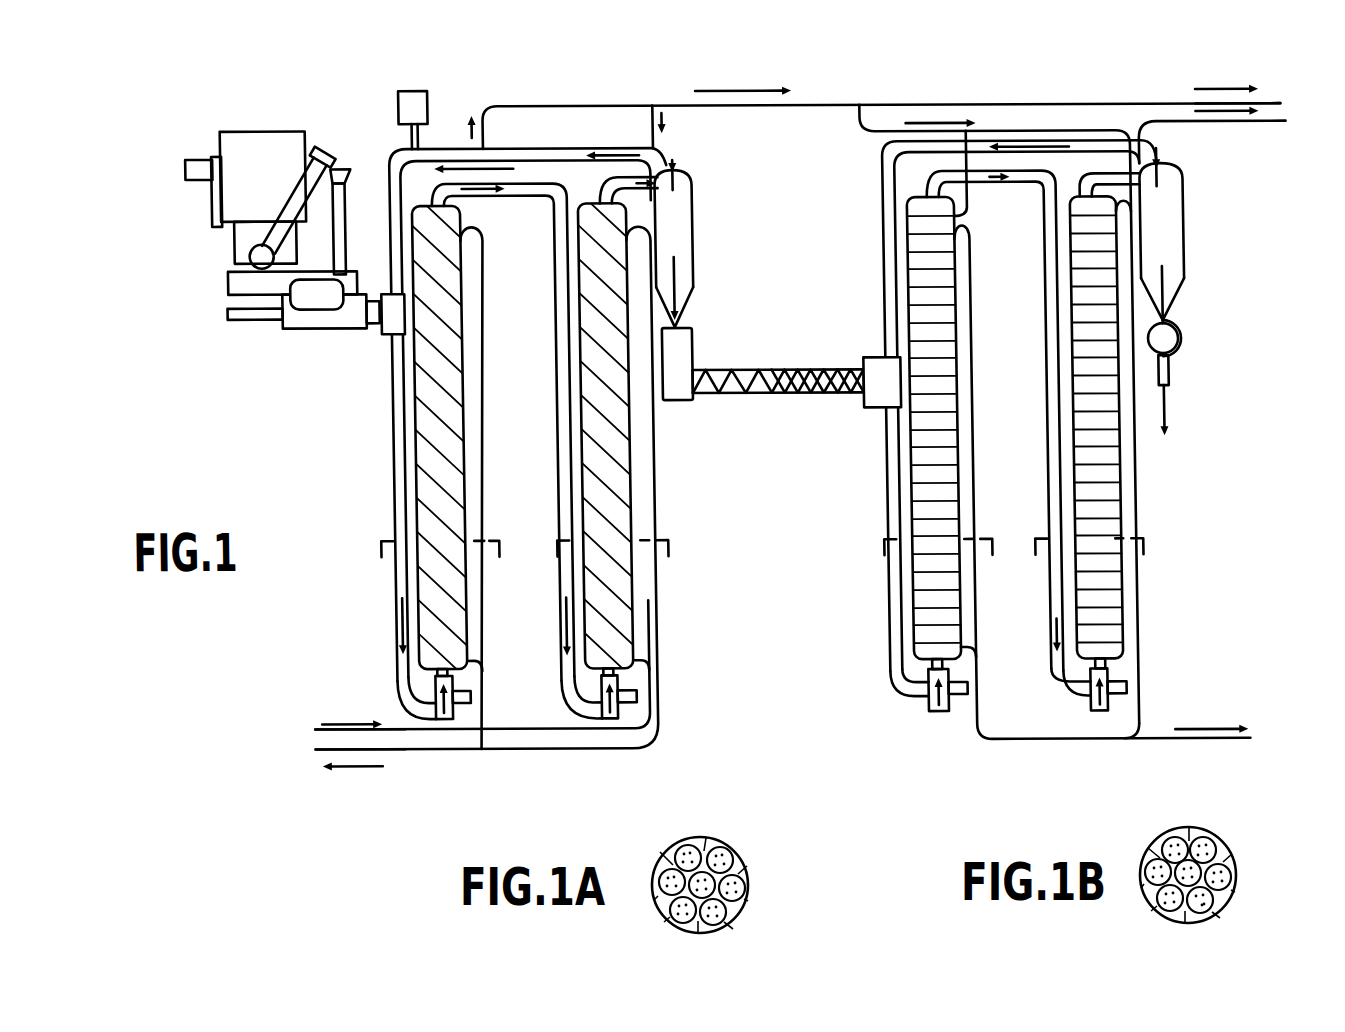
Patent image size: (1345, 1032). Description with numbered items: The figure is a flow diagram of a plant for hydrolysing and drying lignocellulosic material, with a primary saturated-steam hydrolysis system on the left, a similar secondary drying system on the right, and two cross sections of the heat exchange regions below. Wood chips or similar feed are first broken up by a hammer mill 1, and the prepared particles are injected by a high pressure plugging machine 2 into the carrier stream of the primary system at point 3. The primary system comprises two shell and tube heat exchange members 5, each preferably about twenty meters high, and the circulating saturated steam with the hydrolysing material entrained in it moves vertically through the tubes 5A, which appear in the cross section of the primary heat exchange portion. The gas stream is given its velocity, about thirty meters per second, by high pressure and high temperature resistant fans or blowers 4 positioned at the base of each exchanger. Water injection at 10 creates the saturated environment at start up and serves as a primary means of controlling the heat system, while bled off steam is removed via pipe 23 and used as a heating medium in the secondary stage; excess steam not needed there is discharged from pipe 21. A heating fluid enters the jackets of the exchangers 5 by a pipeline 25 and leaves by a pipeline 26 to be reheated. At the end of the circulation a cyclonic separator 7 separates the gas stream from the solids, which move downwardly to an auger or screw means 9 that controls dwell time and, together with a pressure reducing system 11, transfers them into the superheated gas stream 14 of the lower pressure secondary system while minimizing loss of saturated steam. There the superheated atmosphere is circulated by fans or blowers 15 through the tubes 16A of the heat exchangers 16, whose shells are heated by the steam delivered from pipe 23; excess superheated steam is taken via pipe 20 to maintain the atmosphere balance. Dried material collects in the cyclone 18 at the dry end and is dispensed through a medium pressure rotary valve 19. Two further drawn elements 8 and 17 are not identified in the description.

In FIG. 1, the hammer mill 1 is at (248, 130).
In FIG. 1, the high pressure plugging machine 2 is at (294, 327).
In FIG. 1, the injection point 3 is at (385, 333).
In FIG. 1, the fans or blowers 4 is at (431, 712).
In FIG. 1, the heat exchange members 5 is at (415, 512).
In FIG. 1A, the tubes 5A is at (706, 840).
In FIG. 1, the cyclonic separator 7 is at (698, 245).
In FIG. 1, the gas conduit 8 is at (458, 148).
In FIG. 1, the auger or screw means 9 is at (760, 395).
In FIG. 1, the water injection 10 is at (403, 108).
In FIG. 1, the pressure reducing system 11 is at (868, 358).
In FIG. 1, the superheated gas stream 14 is at (886, 462).
In FIG. 1, the fans or blowers 15 is at (936, 712).
In FIG. 1, the heat exchangers 16 is at (957, 500).
In FIG. 1B, the tubes 16A is at (1186, 830).
In FIG. 1, the connecting conduit 17 is at (1045, 282).
In FIG. 1, the cyclone 18 is at (1186, 218).
In FIG. 1, the medium pressure rotary valve 19 is at (1182, 340).
In FIG. 1, the pipe 20 is at (1285, 123).
In FIG. 1, the pipe 21 is at (1283, 106).
In FIG. 1, the pipe 23 is at (565, 105).
In FIG. 1, the pipeline 25 is at (310, 728).
In FIG. 1, the pipeline 26 is at (310, 748).